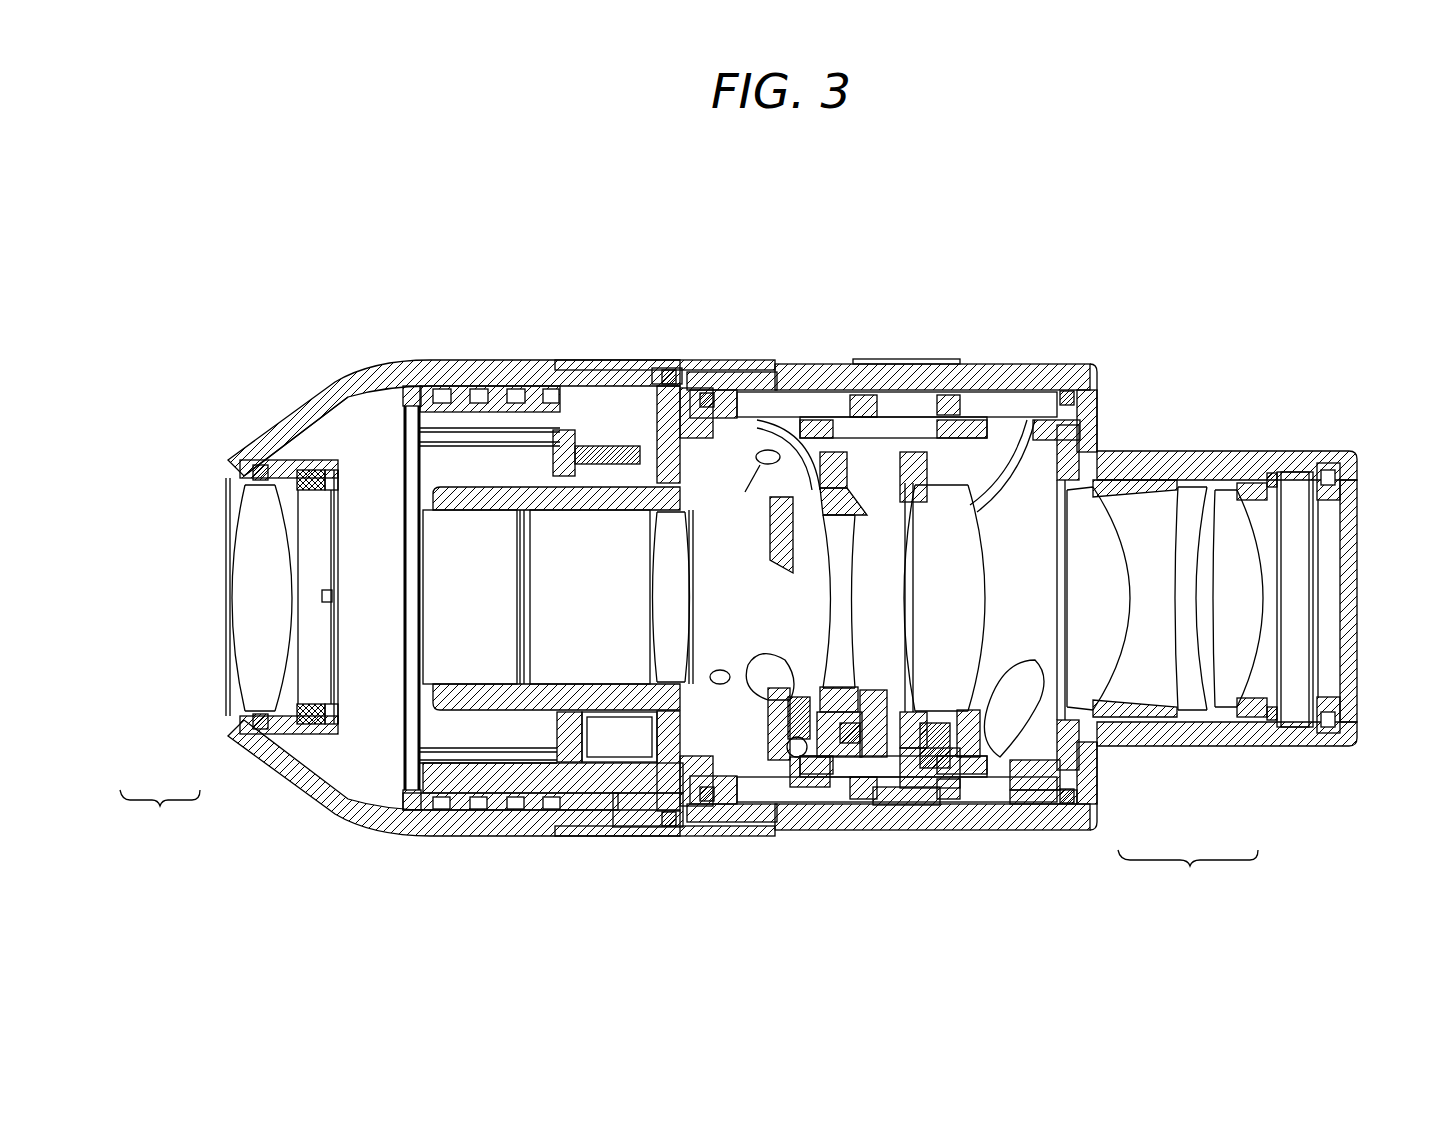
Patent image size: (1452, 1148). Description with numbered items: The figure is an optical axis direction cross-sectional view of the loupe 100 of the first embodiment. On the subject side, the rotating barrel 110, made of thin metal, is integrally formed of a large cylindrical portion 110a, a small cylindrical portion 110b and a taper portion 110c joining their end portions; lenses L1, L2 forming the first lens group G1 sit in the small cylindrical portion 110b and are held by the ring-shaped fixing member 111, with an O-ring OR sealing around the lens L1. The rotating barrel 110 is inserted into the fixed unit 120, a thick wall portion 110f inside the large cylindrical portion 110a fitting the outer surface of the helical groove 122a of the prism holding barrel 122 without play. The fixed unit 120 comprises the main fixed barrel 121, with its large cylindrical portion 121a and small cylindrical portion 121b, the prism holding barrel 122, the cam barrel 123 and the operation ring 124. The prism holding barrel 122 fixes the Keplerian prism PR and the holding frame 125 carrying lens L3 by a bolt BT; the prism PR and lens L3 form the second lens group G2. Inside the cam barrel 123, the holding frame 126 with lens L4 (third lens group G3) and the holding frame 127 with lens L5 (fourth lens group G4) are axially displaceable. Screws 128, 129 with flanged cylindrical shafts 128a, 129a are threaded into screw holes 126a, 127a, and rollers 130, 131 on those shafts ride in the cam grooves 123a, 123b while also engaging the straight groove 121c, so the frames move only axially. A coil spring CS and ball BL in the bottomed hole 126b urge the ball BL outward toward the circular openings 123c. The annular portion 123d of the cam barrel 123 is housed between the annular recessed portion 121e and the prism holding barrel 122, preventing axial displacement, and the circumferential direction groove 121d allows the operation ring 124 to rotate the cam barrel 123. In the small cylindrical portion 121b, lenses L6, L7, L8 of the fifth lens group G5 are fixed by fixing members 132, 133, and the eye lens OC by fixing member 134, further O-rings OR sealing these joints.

The loupe 100 is at (752, 222).
The rotating barrel 110 is at (230, 462).
The large cylindrical portion 110a is at (583, 372).
The small cylindrical portion 110b is at (293, 467).
The taper portion 110c is at (262, 440).
The thick wall portion 110f is at (468, 370).
The fixing member 111 is at (325, 466).
The fixed unit 120 is at (1370, 441).
The main fixed barrel 121 is at (1352, 746).
The large cylindrical portion 121a is at (1013, 392).
The small cylindrical portion 121b is at (1202, 480).
The straight groove 121c is at (1022, 805).
The circumferential direction groove 121d is at (895, 392).
The annular recessed portion 121e is at (712, 440).
The prism holding barrel 122 is at (600, 836).
The helical groove 122a is at (437, 373).
The cam barrel 123 is at (760, 372).
The cam groove 123a is at (783, 430).
The cam groove 123b is at (1045, 420).
The circular opening 123c is at (757, 510).
The annular portion 123d is at (660, 372).
The operation ring 124 is at (987, 362).
The holding frame 125 is at (455, 812).
The holding frame 126 is at (830, 405).
The screw hole 126a is at (803, 695).
The bottomed hole 126b is at (773, 680).
The holding frame 127 is at (932, 420).
The screw hole 127a is at (962, 700).
The screw 128 is at (860, 790).
The cylindrical shaft 128a is at (853, 790).
The screw 129 is at (960, 790).
The cylindrical shaft 129a is at (932, 790).
The roller 130 is at (803, 790).
The roller 131 is at (1000, 795).
The fixing member 132 is at (1143, 480).
The fixing member 133 is at (1243, 484).
The fixing member 134 is at (1339, 503).
The bolt BT is at (553, 450).
The ball BL is at (797, 758).
The coil spring CS is at (785, 715).
The O-ring OR is at (256, 736).
The eye lens OC is at (1300, 570).
The prism PR is at (555, 549).
The first lens group G1 is at (226, 662).
The second lens group G2 is at (412, 665).
The third lens group G3 is at (788, 604).
The fourth lens group G4 is at (984, 566).
The fifth lens group G5 is at (1165, 694).
The lens L1 is at (267, 650).
The lens L2 is at (300, 695).
The lens L3 is at (668, 558).
The lens L4 is at (833, 545).
The lens L5 is at (968, 535).
The lens L6 is at (1112, 668).
The lens L7 is at (1193, 707).
The lens L8 is at (1232, 687).